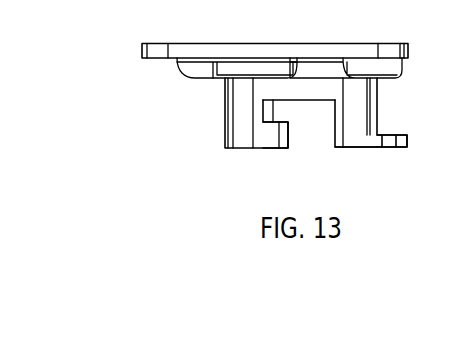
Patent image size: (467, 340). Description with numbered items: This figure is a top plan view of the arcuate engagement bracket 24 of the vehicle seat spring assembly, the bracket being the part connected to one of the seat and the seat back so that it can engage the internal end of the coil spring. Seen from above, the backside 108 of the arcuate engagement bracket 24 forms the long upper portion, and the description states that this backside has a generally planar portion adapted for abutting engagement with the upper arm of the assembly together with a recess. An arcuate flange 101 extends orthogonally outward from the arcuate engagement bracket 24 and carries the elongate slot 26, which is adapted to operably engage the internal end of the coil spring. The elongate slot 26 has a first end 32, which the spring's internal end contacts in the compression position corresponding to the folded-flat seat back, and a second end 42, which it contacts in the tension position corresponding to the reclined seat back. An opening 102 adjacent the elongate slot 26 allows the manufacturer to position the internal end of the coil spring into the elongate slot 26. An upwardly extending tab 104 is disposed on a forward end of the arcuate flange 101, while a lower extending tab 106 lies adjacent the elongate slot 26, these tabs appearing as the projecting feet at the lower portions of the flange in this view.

The arcuate engagement bracket 24 is at (155, 58).
The first end 32 is at (272, 108).
The backside 108 is at (356, 44).
The arcuate flange 101 is at (360, 112).
The upwardly extending tab 104 is at (402, 148).
The second end 42 is at (321, 140).
The opening 102 is at (313, 134).
The elongate slot 26 is at (303, 112).
The lower extending tab 106 is at (299, 138).